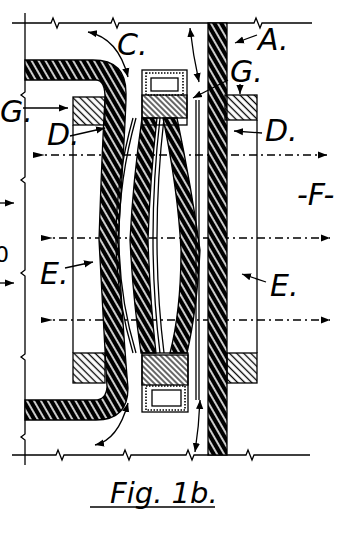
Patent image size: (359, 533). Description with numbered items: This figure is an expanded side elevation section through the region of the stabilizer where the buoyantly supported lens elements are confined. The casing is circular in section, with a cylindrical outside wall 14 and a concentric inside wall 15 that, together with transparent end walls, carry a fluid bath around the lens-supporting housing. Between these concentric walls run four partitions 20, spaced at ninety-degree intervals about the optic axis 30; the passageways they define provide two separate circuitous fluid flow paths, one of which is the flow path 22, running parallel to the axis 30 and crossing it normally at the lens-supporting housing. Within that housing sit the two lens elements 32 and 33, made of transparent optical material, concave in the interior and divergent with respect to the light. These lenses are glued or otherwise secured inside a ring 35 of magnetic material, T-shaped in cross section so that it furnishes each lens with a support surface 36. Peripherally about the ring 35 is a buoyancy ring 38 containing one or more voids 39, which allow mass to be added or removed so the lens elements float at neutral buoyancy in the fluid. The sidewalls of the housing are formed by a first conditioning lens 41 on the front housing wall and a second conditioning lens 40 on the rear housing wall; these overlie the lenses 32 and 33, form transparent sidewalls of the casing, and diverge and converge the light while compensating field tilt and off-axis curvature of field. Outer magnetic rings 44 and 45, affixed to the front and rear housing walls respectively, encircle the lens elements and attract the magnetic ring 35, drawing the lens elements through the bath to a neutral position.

The outside wall 14 is at (228, 415).
The inside wall 15 is at (60, 80).
The partition 20 is at (76, 255).
The fluid flow path 22 is at (196, 428).
The optic axis 30 is at (306, 239).
The lens element 32 is at (140, 210).
The lens element 33 is at (198, 216).
The ring 35 is at (140, 398).
The support surface 36 is at (142, 125).
The buoyancy ring 38 is at (165, 83).
The void 39 is at (158, 82).
The second conditioning lens 40 is at (205, 160).
The first conditioning lens 41 is at (97, 219).
The outer magnetic ring 44 is at (257, 362).
The outer magnetic ring 45 is at (74, 368).